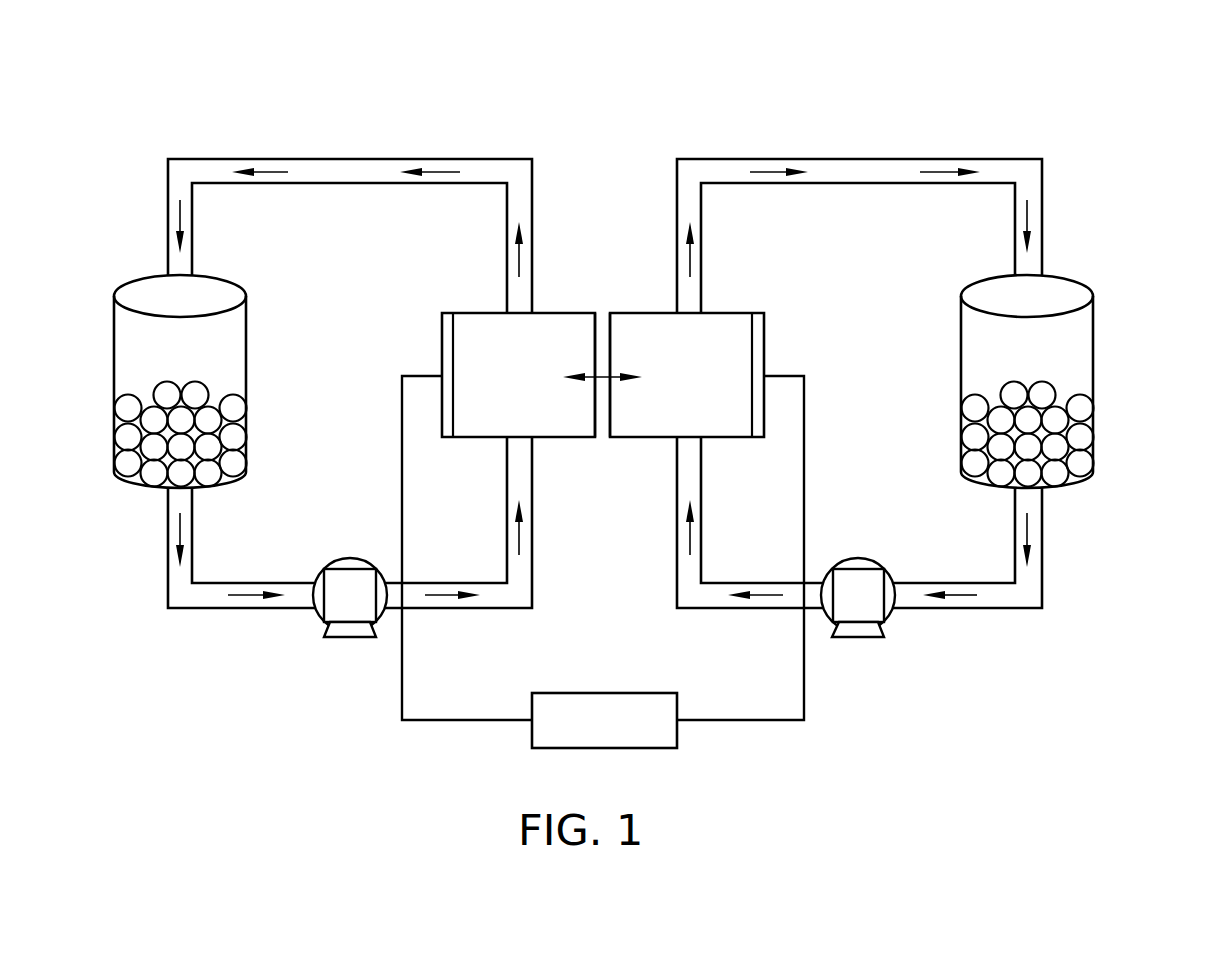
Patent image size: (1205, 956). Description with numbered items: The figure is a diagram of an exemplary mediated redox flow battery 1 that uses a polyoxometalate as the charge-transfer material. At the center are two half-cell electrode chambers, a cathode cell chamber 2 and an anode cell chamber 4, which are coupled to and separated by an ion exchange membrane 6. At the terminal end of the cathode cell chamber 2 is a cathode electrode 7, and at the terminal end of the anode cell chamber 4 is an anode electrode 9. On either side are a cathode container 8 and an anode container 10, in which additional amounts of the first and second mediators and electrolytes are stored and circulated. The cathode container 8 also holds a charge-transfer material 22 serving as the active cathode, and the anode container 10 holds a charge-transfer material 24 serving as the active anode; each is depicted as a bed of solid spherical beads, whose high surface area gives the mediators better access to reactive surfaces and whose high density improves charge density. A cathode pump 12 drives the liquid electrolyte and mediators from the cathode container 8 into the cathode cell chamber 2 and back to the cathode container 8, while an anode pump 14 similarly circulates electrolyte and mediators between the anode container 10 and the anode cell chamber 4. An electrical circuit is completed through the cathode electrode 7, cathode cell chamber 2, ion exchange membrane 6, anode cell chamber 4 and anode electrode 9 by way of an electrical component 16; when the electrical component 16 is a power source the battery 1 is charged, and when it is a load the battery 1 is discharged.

The mediated redox flow battery 1 is at (960, 96).
The cathode cell chamber 2 is at (500, 328).
The anode cell chamber 4 is at (705, 316).
The ion exchange membrane 6 is at (612, 402).
The cathode electrode 7 is at (447, 330).
The cathode container 8 is at (248, 360).
The anode electrode 9 is at (757, 332).
The anode container 10 is at (962, 336).
The cathode pump 12 is at (330, 570).
The anode pump 14 is at (870, 569).
The electrical component 16 is at (605, 693).
The charge-transfer material (active cathode) 22 is at (118, 415).
The charge-transfer material (active anode) 24 is at (1055, 395).